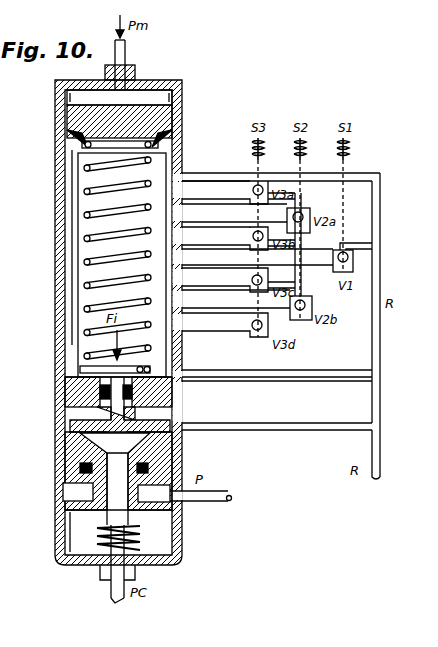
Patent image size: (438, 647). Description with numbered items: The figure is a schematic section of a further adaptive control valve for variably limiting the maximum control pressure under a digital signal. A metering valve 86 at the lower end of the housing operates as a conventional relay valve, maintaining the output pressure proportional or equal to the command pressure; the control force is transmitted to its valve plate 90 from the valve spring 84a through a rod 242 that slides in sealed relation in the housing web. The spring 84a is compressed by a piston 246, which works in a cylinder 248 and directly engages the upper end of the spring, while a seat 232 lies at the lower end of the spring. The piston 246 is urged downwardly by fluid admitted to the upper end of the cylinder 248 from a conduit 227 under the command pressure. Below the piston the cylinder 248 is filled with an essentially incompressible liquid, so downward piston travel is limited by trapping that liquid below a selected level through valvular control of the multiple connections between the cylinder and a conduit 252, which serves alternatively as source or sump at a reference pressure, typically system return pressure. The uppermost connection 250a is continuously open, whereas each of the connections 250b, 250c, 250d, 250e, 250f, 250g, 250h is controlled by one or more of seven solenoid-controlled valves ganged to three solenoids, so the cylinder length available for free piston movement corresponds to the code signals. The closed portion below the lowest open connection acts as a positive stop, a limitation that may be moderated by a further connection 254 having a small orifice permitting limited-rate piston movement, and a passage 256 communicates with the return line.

The conduit 227 is at (127, 41).
The piston 246 is at (77, 128).
The cylinder 248 is at (72, 204).
The valve spring 84a is at (84, 334).
The spring seat 232 is at (56, 372).
The rod 242 is at (86, 387).
The valve plate 90 is at (163, 423).
The metering valve 86 is at (158, 455).
The uppermost connection 250a is at (281, 170).
The connection 250b is at (225, 192).
The connection 250c is at (234, 213).
The connection 250d is at (225, 238).
The connection 250e is at (257, 257).
The connection 250f is at (225, 280).
The connection 250g is at (236, 299).
The connection 250h is at (225, 325).
The conduit 252 is at (385, 175).
The further connection 254 is at (195, 359).
The chamber passage 256 is at (242, 381).